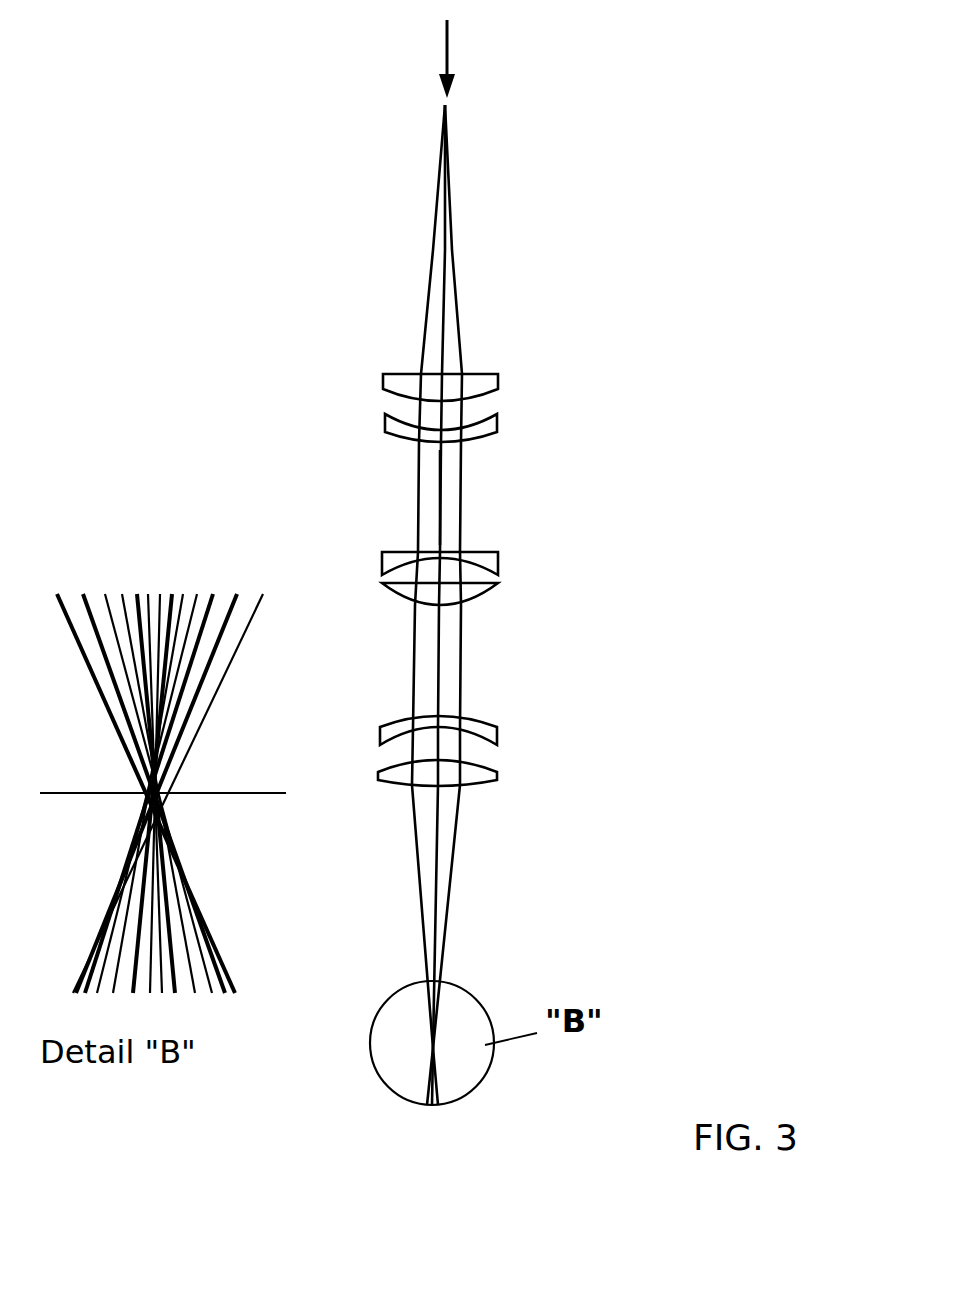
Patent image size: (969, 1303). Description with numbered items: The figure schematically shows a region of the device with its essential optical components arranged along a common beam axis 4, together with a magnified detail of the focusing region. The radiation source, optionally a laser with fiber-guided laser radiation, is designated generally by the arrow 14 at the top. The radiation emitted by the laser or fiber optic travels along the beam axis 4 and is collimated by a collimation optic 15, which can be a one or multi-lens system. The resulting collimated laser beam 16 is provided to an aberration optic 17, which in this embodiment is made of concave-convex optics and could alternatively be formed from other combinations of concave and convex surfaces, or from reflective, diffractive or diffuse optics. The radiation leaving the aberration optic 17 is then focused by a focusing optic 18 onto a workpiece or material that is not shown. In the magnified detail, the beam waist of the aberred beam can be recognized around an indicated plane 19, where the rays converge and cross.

The radiation source 14 is at (449, 52).
The beam axis 4 is at (445, 249).
The collimation optic 15 is at (498, 402).
The collimated laser beam 16 is at (452, 497).
The aberration optic 17 is at (510, 575).
The focusing optic 18 is at (492, 752).
The indicated plane 19 is at (232, 793).